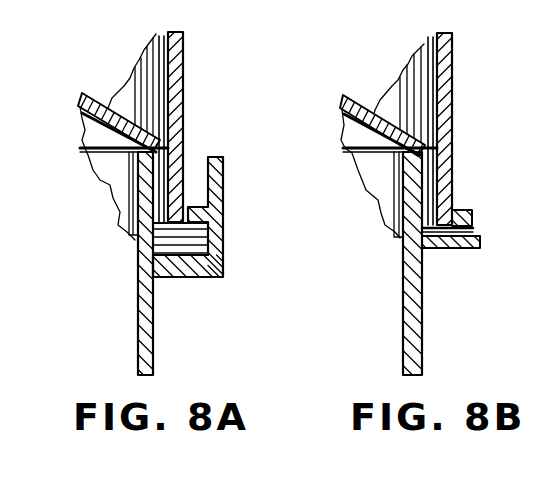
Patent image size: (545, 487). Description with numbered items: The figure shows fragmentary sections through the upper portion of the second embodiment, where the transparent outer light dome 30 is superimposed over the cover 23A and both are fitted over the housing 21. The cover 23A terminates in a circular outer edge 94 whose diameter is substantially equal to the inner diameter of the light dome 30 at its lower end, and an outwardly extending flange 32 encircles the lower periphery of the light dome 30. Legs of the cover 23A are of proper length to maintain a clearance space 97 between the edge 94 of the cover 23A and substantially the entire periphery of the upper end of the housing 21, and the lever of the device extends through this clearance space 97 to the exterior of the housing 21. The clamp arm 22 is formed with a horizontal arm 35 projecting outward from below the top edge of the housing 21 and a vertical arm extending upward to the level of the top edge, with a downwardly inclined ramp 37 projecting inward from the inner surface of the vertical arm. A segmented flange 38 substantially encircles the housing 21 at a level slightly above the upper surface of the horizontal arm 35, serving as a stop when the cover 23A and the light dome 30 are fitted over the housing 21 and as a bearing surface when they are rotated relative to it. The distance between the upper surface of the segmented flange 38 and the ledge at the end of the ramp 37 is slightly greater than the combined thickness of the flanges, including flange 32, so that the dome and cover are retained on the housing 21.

In FIG. 8A, the housing 21 is at (132, 232).
In FIG. 8B, the housing 21 is at (408, 277).
In FIG. 8A, the clamp arm 22 is at (222, 160).
In FIG. 8A, the cover 23A is at (165, 125).
In FIG. 8B, the cover 23A is at (428, 125).
In FIG. 8A, the outer light dome 30 is at (199, 60).
In FIG. 8B, the outer light dome 30 is at (468, 70).
In FIG. 8A, the flange 32 is at (210, 219).
In FIG. 8B, the flange 32 is at (470, 223).
In FIG. 8A, the horizontal arm 35 is at (210, 277).
In FIG. 8A, the ramp 37 is at (195, 216).
In FIG. 8A, the segmented flange 38 is at (173, 250).
In FIG. 8B, the segmented flange 38 is at (443, 250).
In FIG. 8A, the circular outer edge 94 is at (117, 95).
In FIG. 8B, the circular outer edge 94 is at (385, 92).
In FIG. 8A, the clearance space 97 is at (110, 160).
In FIG. 8B, the clearance space 97 is at (368, 160).